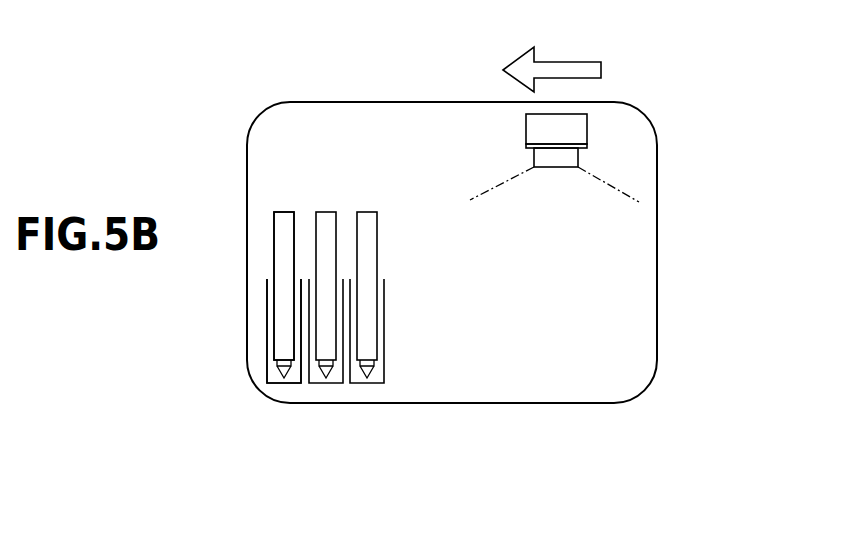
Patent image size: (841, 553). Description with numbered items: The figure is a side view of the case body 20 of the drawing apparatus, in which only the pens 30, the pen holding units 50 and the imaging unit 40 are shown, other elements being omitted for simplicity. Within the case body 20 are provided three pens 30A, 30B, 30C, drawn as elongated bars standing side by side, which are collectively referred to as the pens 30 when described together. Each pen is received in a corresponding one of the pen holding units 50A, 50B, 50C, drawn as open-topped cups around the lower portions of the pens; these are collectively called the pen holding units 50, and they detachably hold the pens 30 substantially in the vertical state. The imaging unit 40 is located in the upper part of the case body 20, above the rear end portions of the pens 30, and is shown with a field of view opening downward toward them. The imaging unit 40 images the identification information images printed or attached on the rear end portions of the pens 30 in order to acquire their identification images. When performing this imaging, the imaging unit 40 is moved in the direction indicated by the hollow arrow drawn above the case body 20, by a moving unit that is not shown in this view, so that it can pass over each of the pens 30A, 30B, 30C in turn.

The case body 20 is at (646, 83).
The imaging unit 40 is at (575, 134).
The pens 30 is at (284, 286).
The pen 30A is at (368, 212).
The pen 30B is at (326, 212).
The pen 30C is at (283, 212).
The pen holding units 50 is at (284, 331).
The pen holding unit 50A is at (367, 384).
The pen holding unit 50B is at (326, 384).
The pen holding unit 50C is at (278, 384).